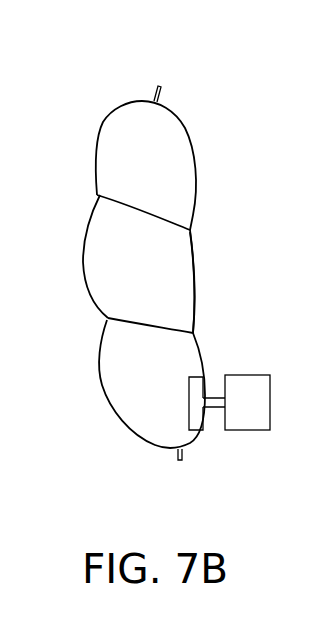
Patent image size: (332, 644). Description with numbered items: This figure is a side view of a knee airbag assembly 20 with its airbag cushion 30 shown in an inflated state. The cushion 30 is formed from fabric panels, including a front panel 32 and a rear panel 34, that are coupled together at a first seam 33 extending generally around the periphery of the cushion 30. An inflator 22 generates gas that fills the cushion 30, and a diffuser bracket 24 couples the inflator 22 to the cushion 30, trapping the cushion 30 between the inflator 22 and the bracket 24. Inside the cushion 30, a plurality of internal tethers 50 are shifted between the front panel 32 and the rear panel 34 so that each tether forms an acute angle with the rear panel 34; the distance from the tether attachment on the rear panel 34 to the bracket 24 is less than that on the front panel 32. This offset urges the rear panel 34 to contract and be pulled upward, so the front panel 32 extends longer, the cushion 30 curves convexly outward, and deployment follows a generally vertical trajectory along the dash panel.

The knee airbag assembly 20 is at (246, 120).
The inflator 22 is at (247, 382).
The diffuser bracket 24 is at (198, 406).
The airbag cushion 30 is at (97, 162).
The front panel 32 is at (83, 260).
The first seam 33 is at (152, 100).
The rear panel 34 is at (195, 253).
The internal tethers 50 is at (128, 202).